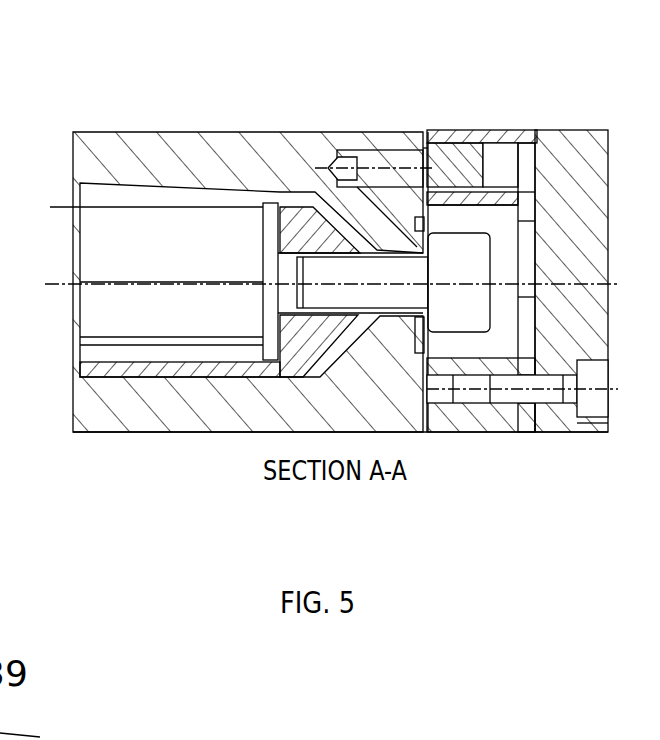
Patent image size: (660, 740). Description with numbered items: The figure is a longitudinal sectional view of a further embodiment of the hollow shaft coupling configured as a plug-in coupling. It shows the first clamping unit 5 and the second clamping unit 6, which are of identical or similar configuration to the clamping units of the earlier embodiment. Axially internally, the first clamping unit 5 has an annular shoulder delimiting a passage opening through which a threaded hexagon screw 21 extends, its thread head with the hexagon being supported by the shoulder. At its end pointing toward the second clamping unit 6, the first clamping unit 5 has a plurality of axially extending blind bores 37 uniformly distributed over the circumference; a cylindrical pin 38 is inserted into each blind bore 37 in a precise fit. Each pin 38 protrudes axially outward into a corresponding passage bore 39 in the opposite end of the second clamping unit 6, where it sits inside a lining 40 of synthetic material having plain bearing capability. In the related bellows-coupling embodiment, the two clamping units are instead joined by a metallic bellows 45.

The threaded hexagon screw 21 is at (495, 288).
The blind bores 37 is at (318, 135).
The pin 38 is at (403, 148).
The passage bore 39 is at (500, 160).
The lining 40 is at (440, 147).
The metallic bellows 45 is at (425, 337).
The first clamping unit 5 is at (183, 540).
The second clamping unit 6 is at (545, 559).